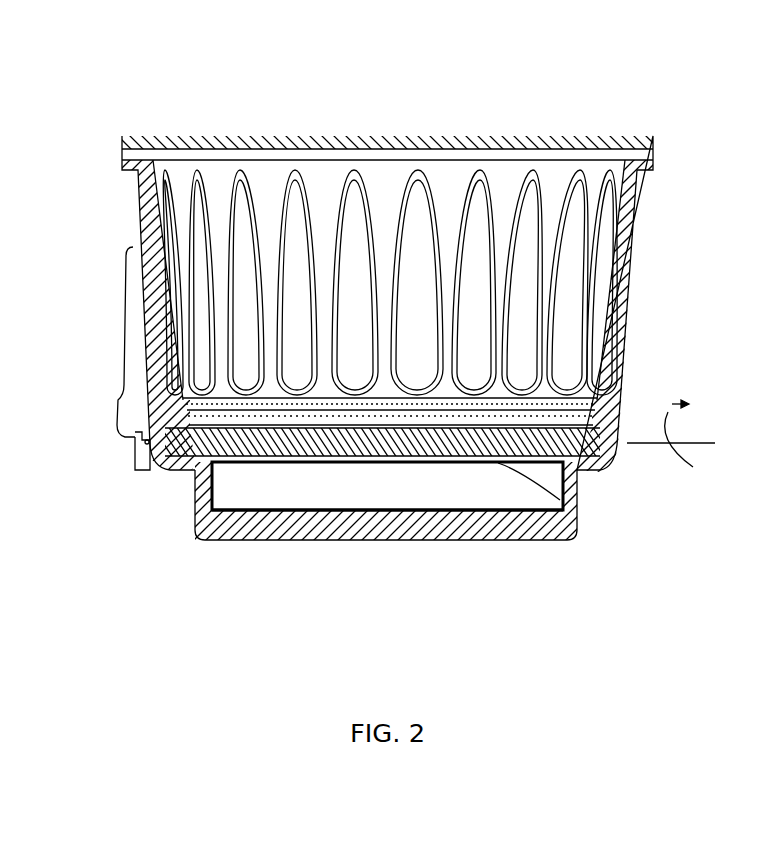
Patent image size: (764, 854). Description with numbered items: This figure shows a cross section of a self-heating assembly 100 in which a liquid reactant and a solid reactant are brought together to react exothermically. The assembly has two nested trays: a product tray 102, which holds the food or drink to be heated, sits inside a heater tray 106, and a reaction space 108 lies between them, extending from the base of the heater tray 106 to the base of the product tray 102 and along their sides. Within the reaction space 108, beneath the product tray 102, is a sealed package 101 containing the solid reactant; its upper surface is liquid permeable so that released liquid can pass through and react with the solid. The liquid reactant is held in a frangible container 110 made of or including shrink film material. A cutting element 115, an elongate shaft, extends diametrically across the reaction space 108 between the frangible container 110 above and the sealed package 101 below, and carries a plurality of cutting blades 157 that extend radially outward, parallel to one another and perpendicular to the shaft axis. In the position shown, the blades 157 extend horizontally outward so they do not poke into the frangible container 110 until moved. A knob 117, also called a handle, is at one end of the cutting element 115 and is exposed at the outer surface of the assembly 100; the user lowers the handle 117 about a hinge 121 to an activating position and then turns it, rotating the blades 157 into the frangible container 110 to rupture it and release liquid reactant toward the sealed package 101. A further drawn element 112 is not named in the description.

The self-heating assembly 100 is at (190, 68).
The sealed package 101 is at (325, 515).
The product tray 102 is at (617, 232).
The heater tray 106 is at (628, 295).
The reaction space 108 is at (578, 472).
The frangible container 110 is at (197, 482).
The bottom plate 112 is at (260, 463).
The cutting element 115 is at (600, 405).
The knob 117 is at (130, 310).
The hinge 121 is at (135, 452).
The cutting blades 157 is at (566, 506).